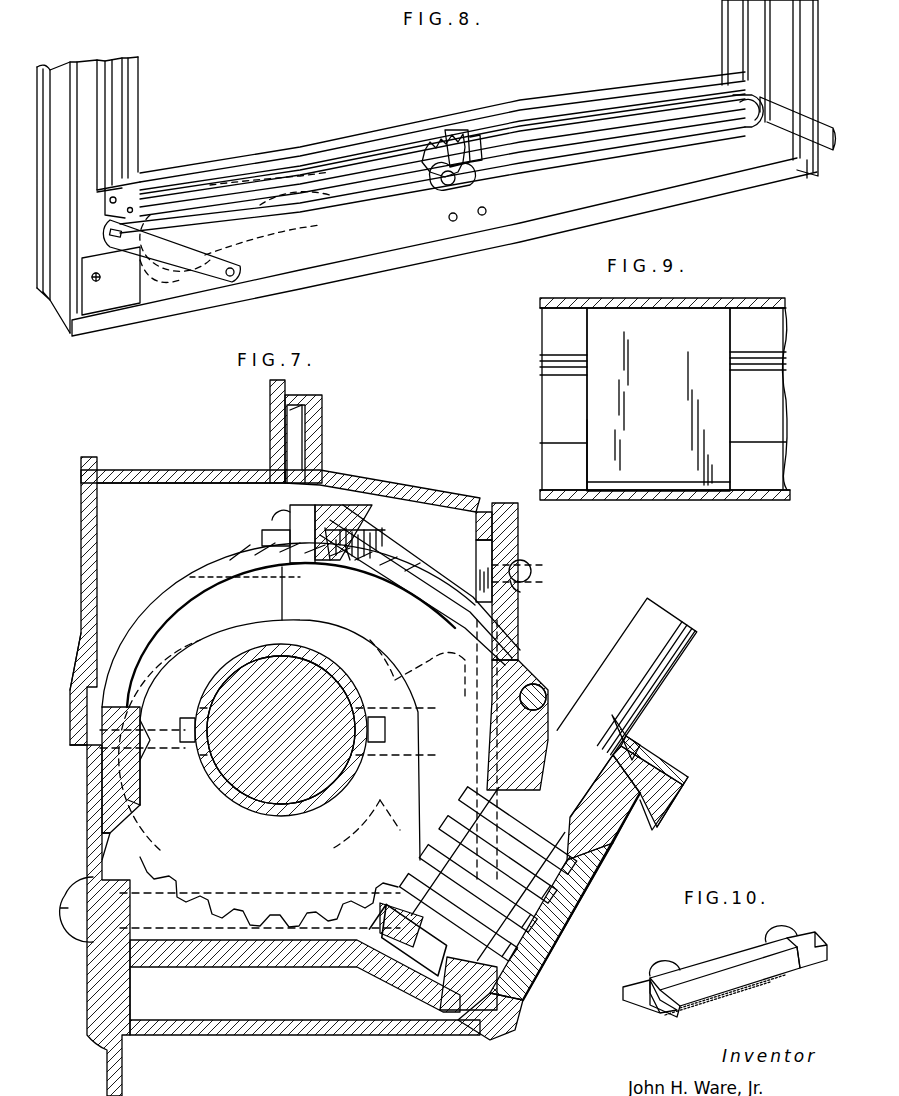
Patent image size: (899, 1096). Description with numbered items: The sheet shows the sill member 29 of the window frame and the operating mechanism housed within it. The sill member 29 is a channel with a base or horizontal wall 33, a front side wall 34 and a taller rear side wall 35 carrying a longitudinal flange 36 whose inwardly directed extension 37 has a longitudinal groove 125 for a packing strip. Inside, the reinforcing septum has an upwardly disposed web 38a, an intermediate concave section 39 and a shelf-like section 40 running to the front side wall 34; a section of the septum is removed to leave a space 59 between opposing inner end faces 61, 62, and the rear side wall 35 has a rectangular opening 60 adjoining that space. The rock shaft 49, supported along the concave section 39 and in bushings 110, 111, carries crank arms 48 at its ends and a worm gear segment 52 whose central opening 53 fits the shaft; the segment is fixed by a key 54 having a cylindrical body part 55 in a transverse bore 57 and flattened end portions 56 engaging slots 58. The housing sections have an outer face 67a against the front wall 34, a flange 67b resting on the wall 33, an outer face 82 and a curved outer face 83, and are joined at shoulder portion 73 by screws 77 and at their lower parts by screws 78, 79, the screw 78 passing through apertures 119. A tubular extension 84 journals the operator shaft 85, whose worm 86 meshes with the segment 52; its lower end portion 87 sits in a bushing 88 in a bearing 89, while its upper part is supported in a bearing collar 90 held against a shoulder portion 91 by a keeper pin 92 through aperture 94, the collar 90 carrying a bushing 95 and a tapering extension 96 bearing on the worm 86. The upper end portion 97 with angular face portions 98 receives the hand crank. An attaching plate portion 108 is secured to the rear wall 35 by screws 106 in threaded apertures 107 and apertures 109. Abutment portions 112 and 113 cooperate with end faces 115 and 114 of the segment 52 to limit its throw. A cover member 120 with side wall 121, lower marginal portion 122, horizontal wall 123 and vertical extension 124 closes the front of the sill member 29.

In FIG. 8, the sill member 29 is at (391, 269).
In FIG. 9, the sill member 29 is at (760, 295).
In FIG. 7, the base or intermediate horizontal wall 33 is at (298, 1036).
In FIG. 7, the front side wall 34 is at (96, 816).
In FIG. 7, the rear side wall 35 is at (478, 528).
In FIG. 7, the longitudinal flange 36 is at (380, 480).
In FIG. 7, the inwardly directed extension 37 is at (322, 432).
In FIG. 9, the upwardly disposed leg section or web 38a is at (556, 468).
In FIG. 9, the intermediate concave section 39 is at (553, 406).
In FIG. 9, the horizontal shelf-like section 40 is at (552, 334).
In FIG. 8, the crank arms 48 is at (215, 270).
In FIG. 8, the rock shaft 49 is at (568, 145).
In FIG. 8, the worm gear segment 52 is at (456, 140).
In FIG. 7, the central opening or hub 53 is at (330, 636).
In FIG. 7, the key 54 is at (380, 662).
In FIG. 10, the key 54 is at (768, 1002).
In FIG. 10, the main cylindrical body part 55 is at (708, 965).
In FIG. 10, the reduced flattened end portions 56 is at (640, 1010).
In FIG. 7, the cylindrical transverse bore 57 is at (215, 782).
In FIG. 7, the slots 58 is at (205, 715).
In FIG. 9, the space 59 is at (641, 482).
In FIG. 8, the rectangular shaped opening 60 is at (425, 152).
In FIG. 9, the rectangular shaped opening 60 is at (698, 496).
In FIG. 9, the inner end face of septum 61 is at (590, 388).
In FIG. 9, the inner end face of septum 62 is at (730, 428).
In FIG. 7, the outer face of housing section 67a is at (110, 786).
In FIG. 7, the rectangular shaped flange 67b is at (132, 995).
In FIG. 7, the shoulder portion 73 is at (318, 500).
In FIG. 7, the screws 77 is at (275, 530).
In FIG. 8, the screw 78 is at (456, 222).
In FIG. 7, the screw 78 is at (218, 968).
In FIG. 8, the screw 79 is at (488, 210).
In FIG. 7, the outer face of lower part of housing section 82 is at (108, 858).
In FIG. 7, the curved outer face 83 is at (165, 605).
In FIG. 7, the tubular extension 84 is at (597, 912).
In FIG. 7, the operator shaft 85 is at (637, 742).
In FIG. 7, the worm 86 is at (568, 938).
In FIG. 7, the lower end portion of operator shaft 87 is at (447, 1000).
In FIG. 7, the bushing 88 is at (523, 998).
In FIG. 7, the bearing 89 is at (413, 990).
In FIG. 7, the bearing collar 90 is at (665, 800).
In FIG. 7, the shoulder portion 91 is at (660, 828).
In FIG. 7, the keeper pin 92 is at (538, 678).
In FIG. 7, the aperture 94 is at (548, 690).
In FIG. 7, the bushing 95 is at (670, 770).
In FIG. 7, the downwardly tapering extension 96 is at (613, 850).
In FIG. 7, the upper end portion of operator shaft 97 is at (690, 620).
In FIG. 7, the angularly related face portions 98 is at (660, 680).
In FIG. 7, the screws 106 is at (528, 584).
In FIG. 7, the threaded apertures 107 is at (531, 568).
In FIG. 7, the attaching plate portion 108 is at (505, 533).
In FIG. 7, the apertures 109 is at (458, 598).
In FIG. 8, the bushings 110 is at (445, 187).
In FIG. 8, the bushings 111 is at (745, 124).
In FIG. 7, the abutment portion 112 is at (340, 556).
In FIG. 7, the abutment portion 113 is at (145, 828).
In FIG. 7, the end face of worm gear quadrant 114 is at (150, 868).
In FIG. 7, the end face of worm gear quadrant 115 is at (440, 830).
In FIG. 7, the apertures 119 is at (90, 945).
In FIG. 7, the cover member 120 is at (138, 463).
In FIG. 7, the vertically extending side wall 121 is at (90, 549).
In FIG. 7, the lower marginal portion 122 is at (68, 708).
In FIG. 7, the horizontal wall 123 is at (218, 470).
In FIG. 7, the vertically directed extension 124 is at (270, 396).
In FIG. 7, the longitudinal groove 125 is at (304, 420).